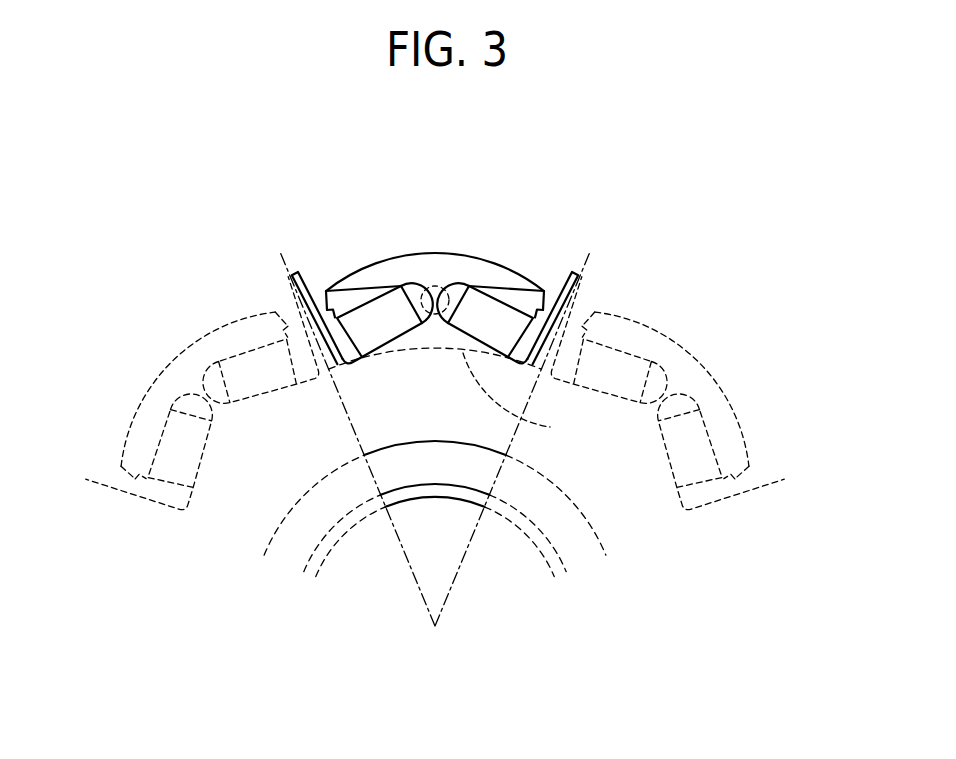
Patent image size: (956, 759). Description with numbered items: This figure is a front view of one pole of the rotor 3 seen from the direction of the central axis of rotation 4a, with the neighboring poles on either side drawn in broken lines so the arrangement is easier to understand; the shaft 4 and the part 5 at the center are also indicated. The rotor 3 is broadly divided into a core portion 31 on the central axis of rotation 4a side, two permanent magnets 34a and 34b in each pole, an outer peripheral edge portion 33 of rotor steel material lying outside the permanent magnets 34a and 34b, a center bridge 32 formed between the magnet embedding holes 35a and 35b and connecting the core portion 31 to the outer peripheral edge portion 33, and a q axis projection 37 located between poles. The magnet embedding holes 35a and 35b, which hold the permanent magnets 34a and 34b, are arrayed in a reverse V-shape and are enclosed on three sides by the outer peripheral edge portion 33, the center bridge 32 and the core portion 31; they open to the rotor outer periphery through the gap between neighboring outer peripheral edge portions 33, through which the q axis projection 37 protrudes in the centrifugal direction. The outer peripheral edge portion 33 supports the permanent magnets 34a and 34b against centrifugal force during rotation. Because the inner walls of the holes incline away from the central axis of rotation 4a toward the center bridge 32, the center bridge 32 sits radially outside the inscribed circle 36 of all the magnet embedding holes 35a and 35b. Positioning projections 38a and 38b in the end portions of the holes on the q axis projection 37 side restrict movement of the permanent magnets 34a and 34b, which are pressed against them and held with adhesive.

The rotor 3 is at (519, 163).
The shaft 4 is at (448, 545).
The central axis of rotation 4a is at (436, 628).
The rotor core hub 5 is at (485, 473).
The core portion 31 is at (421, 395).
The center bridge 32 is at (442, 290).
The outer peripheral edge portion 33 is at (431, 255).
The permanent magnet 34a is at (372, 308).
The permanent magnet 34b is at (510, 307).
The magnet embedding hole 35a is at (420, 289).
The magnet embedding hole 35b is at (458, 288).
The inscribed circle 36 is at (523, 398).
The q axis projection 37 is at (295, 272).
The positioning projection 38a is at (333, 313).
The positioning projection 38b is at (537, 313).